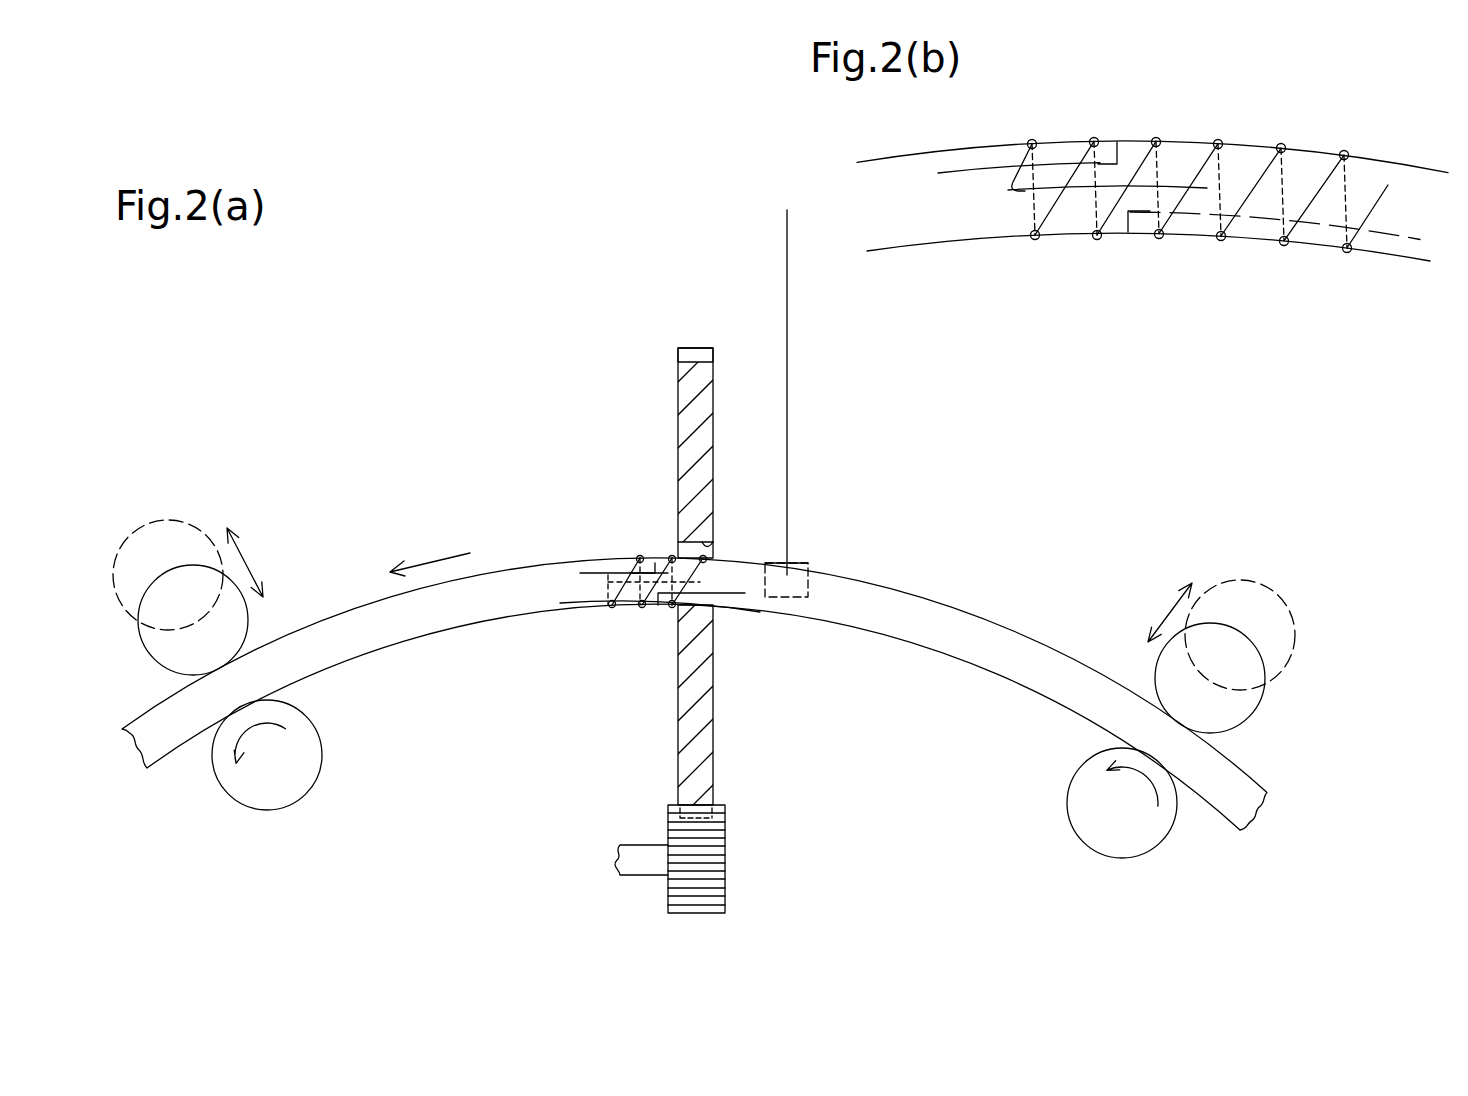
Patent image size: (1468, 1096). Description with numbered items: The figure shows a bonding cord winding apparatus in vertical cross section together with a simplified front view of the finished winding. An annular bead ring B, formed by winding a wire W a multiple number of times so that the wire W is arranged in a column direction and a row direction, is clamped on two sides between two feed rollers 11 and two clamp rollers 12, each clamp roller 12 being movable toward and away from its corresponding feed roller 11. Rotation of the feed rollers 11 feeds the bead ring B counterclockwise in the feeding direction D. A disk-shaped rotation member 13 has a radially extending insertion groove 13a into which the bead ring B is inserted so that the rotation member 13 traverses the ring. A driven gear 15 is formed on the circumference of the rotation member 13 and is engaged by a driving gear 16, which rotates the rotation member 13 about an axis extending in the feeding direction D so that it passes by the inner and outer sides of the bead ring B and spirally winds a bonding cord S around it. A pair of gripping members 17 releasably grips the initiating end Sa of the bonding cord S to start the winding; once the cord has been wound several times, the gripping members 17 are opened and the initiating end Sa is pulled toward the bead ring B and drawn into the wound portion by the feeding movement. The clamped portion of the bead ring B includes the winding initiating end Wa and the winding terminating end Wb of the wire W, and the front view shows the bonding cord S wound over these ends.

In FIG. 2A, the feed roller 11 is at (220, 790).
In FIG. 2A, the clamp roller 12 is at (123, 599).
In FIG. 2A, the rotation member 13 is at (683, 396).
In FIG. 2A, the insertion groove 13a is at (714, 549).
In FIG. 2A, the driven gear 15 is at (692, 355).
In FIG. 2A, the driving gear 16 is at (726, 816).
In FIG. 2A, the gripping member 17 is at (802, 570).
In FIG. 2A, the bead ring B is at (508, 568).
In FIG. 2A, the feeding direction D is at (411, 572).
In FIG. 2A, the bonding cord S is at (787, 385).
In FIG. 2B, the bonding cord S is at (1319, 170).
In FIG. 2A, the initiating end Sa is at (610, 575).
In FIG. 2B, the initiating end Sa is at (1136, 212).
In FIG. 2A, the wire W is at (734, 605).
In FIG. 2B, the wire W is at (1380, 250).
In FIG. 2A, the winding initiating end Wa is at (662, 605).
In FIG. 2B, the winding initiating end Wa is at (1254, 234).
In FIG. 2A, the winding terminating end Wb is at (648, 562).
In FIG. 2B, the winding terminating end Wb is at (1109, 150).